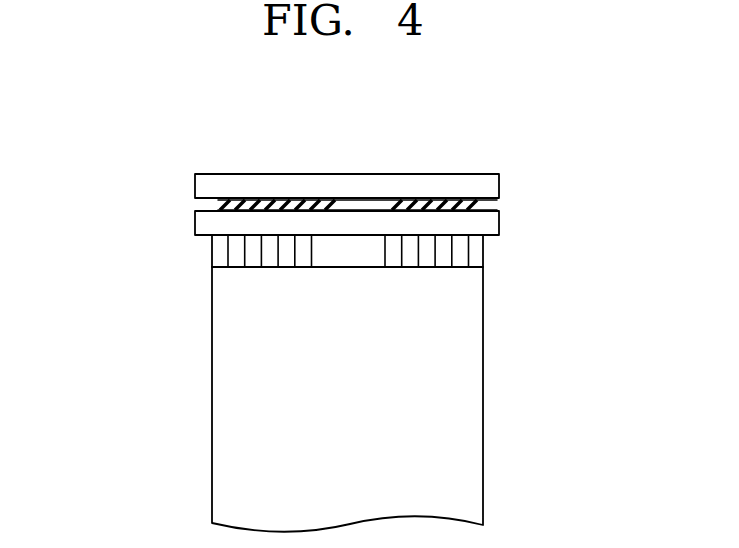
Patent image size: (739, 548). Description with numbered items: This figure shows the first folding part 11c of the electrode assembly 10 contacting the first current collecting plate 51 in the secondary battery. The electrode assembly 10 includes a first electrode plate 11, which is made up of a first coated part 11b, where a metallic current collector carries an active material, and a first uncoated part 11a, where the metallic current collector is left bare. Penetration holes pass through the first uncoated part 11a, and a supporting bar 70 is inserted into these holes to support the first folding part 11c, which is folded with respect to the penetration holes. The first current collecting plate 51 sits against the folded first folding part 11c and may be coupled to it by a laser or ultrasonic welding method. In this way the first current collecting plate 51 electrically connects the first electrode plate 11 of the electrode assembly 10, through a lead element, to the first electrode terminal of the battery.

The electrode assembly 10 is at (335, 356).
The first electrode plate 11 is at (277, 356).
The first uncoated part 11a is at (214, 252).
The first coated part 11b is at (214, 338).
The first folding part 11c is at (298, 195).
The first current collecting plate 51 is at (493, 188).
The supporting bar 70 is at (493, 228).